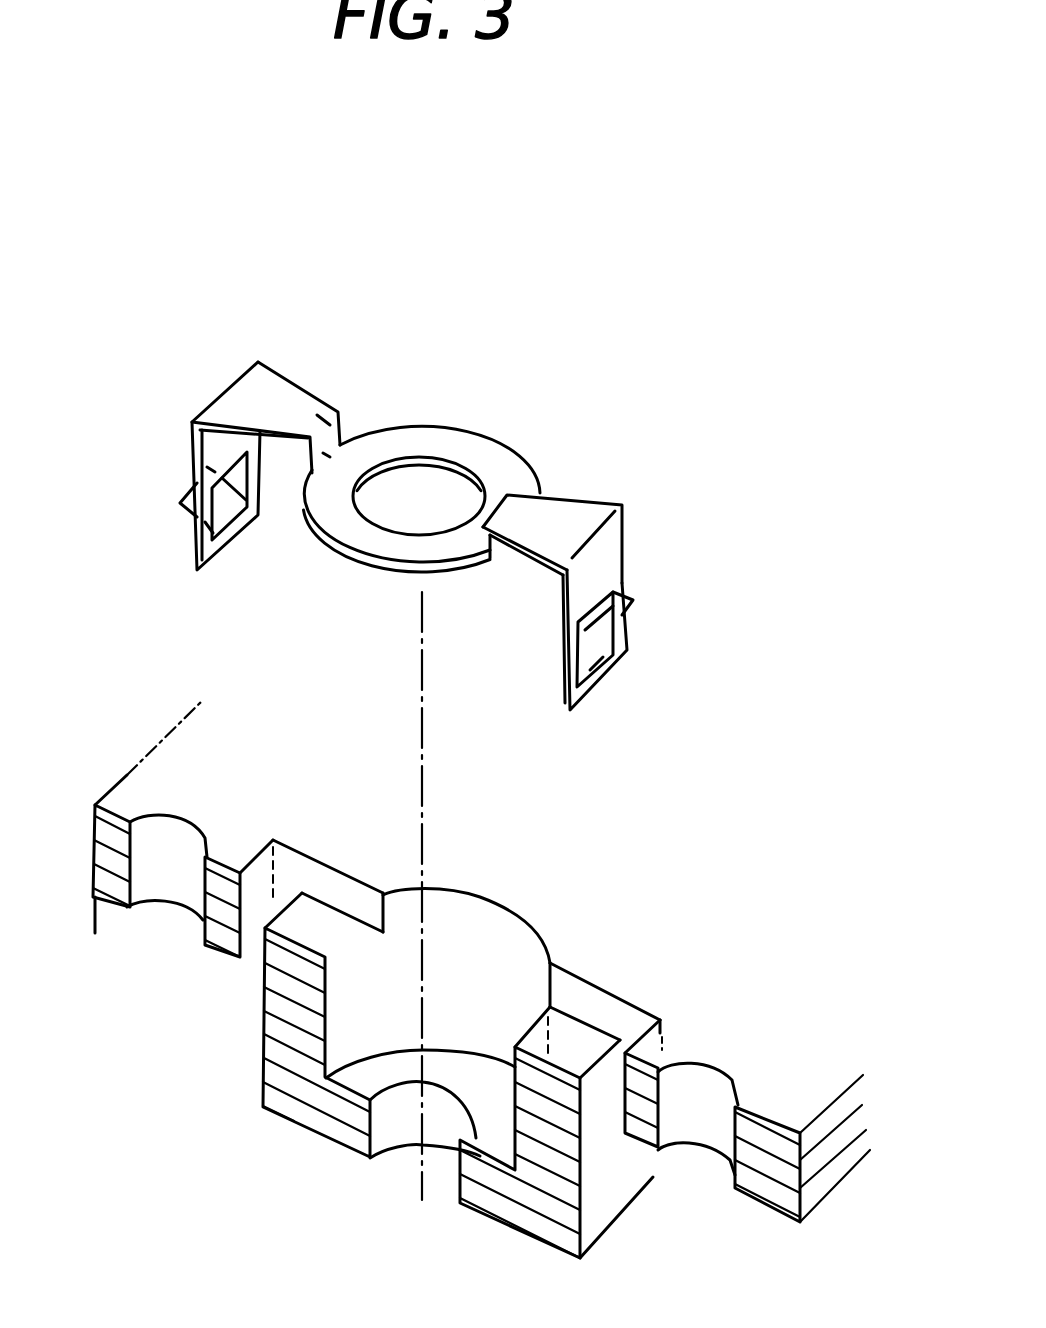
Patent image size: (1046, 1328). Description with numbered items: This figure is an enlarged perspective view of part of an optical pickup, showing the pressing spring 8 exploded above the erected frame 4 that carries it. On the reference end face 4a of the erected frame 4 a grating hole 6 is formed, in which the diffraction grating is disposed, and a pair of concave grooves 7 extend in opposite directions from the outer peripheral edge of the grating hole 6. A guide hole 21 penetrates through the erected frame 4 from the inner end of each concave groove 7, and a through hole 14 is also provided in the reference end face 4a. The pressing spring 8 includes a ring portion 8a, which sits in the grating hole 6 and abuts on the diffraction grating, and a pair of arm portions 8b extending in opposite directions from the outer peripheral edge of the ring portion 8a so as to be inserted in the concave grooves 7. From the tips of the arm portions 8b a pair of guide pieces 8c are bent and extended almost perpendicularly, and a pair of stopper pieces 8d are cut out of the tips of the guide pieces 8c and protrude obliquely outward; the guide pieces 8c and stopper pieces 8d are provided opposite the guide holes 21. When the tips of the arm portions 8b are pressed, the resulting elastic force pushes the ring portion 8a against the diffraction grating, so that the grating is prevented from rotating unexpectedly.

The pressing spring 8 is at (452, 410).
The ring portion 8a is at (500, 463).
The arm portions 8b is at (280, 405).
The guide pieces 8c is at (192, 447).
The stopper pieces 8d is at (182, 501).
The erected frame 4 is at (185, 705).
The reference end face 4a is at (190, 753).
The grating hole 6 is at (473, 930).
The concave grooves 7 is at (348, 897).
The through hole 14 is at (160, 885).
The guide hole 21 is at (250, 928).